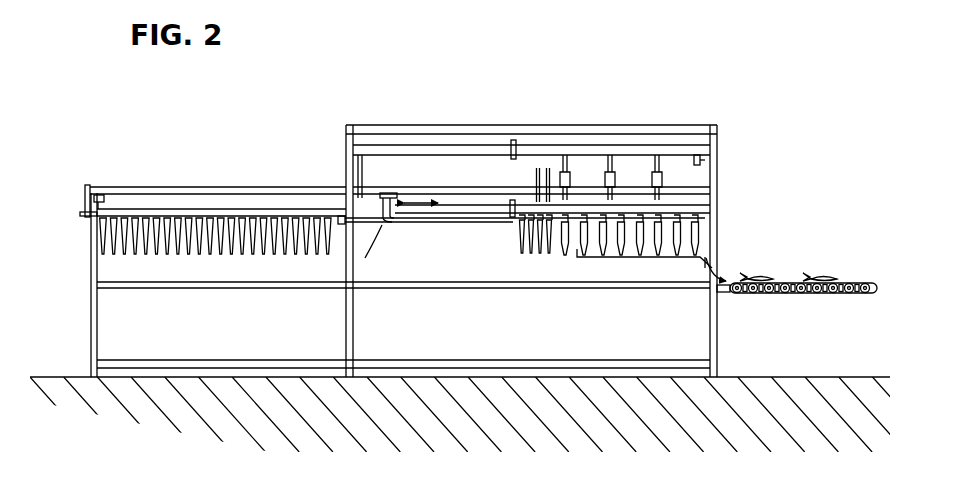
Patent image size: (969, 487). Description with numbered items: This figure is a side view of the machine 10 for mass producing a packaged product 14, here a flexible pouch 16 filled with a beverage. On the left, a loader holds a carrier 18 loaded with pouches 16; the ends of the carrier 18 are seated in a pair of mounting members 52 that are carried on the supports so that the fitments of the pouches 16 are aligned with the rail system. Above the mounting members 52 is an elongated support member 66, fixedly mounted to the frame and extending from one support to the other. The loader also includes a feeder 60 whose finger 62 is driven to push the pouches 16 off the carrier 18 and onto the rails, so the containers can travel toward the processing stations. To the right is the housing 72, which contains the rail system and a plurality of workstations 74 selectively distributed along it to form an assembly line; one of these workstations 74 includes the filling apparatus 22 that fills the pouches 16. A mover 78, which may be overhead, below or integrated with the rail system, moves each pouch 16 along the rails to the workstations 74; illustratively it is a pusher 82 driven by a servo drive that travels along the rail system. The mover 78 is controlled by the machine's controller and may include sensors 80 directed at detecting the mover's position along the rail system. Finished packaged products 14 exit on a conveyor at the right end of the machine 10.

The machine 10 is at (501, 85).
The packaged product 14 is at (821, 272).
The flexible pouch 16 is at (192, 236).
The carrier 18 is at (190, 210).
The filling apparatus 22 is at (565, 162).
The mounting members 52 is at (88, 212).
The feeder 60 is at (97, 183).
The finger 62 is at (104, 198).
The support member 66 is at (240, 189).
The housing 72 is at (571, 96).
The workstations 74 is at (665, 176).
The mover 78 is at (381, 228).
The sensors 80 is at (703, 161).
The pusher 82 is at (391, 208).